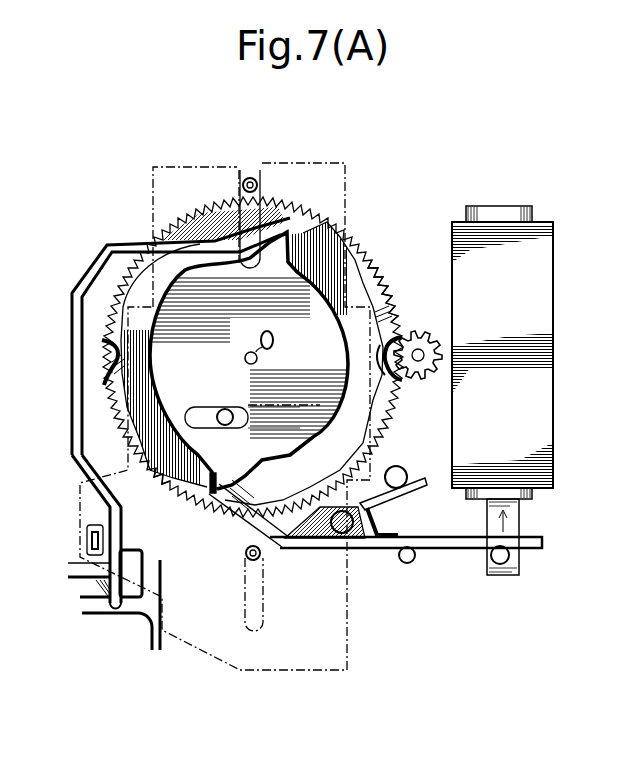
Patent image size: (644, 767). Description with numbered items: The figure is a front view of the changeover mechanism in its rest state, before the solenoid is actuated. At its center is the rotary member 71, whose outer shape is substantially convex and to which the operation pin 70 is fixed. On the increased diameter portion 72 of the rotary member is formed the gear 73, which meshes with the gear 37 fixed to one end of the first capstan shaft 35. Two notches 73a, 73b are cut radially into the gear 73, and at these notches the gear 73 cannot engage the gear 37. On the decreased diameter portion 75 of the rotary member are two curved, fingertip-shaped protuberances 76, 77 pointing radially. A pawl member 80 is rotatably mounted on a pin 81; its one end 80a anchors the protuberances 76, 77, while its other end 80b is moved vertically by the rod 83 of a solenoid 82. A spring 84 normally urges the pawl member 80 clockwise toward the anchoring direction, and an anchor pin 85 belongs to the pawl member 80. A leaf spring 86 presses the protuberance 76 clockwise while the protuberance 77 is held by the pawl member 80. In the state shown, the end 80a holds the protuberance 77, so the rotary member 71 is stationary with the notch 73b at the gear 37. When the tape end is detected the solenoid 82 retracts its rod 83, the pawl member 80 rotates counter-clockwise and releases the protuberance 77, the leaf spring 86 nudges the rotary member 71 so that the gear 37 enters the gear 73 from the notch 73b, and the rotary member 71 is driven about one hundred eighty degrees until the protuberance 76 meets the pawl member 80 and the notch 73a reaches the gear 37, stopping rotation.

The first capstan shaft 35 is at (418, 340).
The gear 37 is at (397, 377).
The operation pin 70 is at (223, 410).
The rotary member 71 is at (366, 238).
The increased diameter portion 72 is at (318, 240).
The gear 73 is at (377, 273).
The notch 73a is at (102, 383).
The notch 73b is at (402, 400).
The decreased diameter portion 75 is at (173, 477).
The curved protuberance 76 is at (273, 240).
The curved protuberance 77 is at (261, 528).
The pawl member 80 is at (313, 552).
The end of pawl member 80a is at (199, 496).
The other end of pawl member 80b is at (533, 548).
The pin 81 is at (343, 533).
The solenoid 82 is at (555, 397).
The rod 83 is at (523, 515).
The spring 84 is at (411, 492).
The anchor pin 85 is at (407, 564).
The leaf spring 86 is at (88, 268).